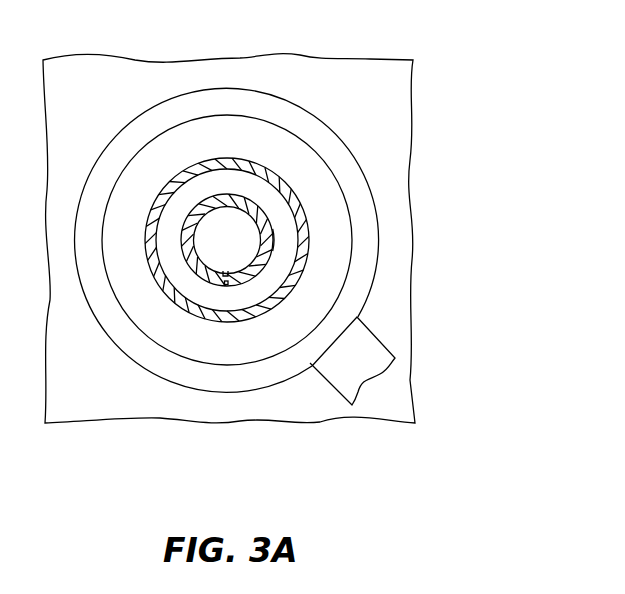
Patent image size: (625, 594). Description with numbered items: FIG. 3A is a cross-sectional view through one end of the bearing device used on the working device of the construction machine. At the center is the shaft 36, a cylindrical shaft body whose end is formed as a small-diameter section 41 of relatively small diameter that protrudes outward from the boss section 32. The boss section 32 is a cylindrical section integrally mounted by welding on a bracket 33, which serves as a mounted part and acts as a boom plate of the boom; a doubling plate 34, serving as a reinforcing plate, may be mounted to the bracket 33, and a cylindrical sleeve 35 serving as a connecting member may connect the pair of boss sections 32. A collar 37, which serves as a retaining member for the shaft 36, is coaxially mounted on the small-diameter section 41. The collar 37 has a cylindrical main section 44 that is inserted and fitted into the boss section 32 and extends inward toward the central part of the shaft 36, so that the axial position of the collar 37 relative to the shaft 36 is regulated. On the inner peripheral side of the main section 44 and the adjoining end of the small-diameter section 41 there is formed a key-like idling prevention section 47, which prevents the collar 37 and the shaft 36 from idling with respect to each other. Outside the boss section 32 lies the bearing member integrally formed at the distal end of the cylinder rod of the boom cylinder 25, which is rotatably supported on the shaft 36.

The boom cylinder 25 is at (377, 337).
The boss section 32 is at (327, 185).
The bracket 33 is at (161, 75).
The doubling plate 34 is at (145, 108).
The cylindrical sleeve 35 is at (227, 158).
The shaft 36 is at (242, 222).
The collar 37 is at (215, 201).
The small-diameter section 41 is at (260, 204).
The main section 44 is at (273, 241).
The idling prevention section 47 is at (225, 275).